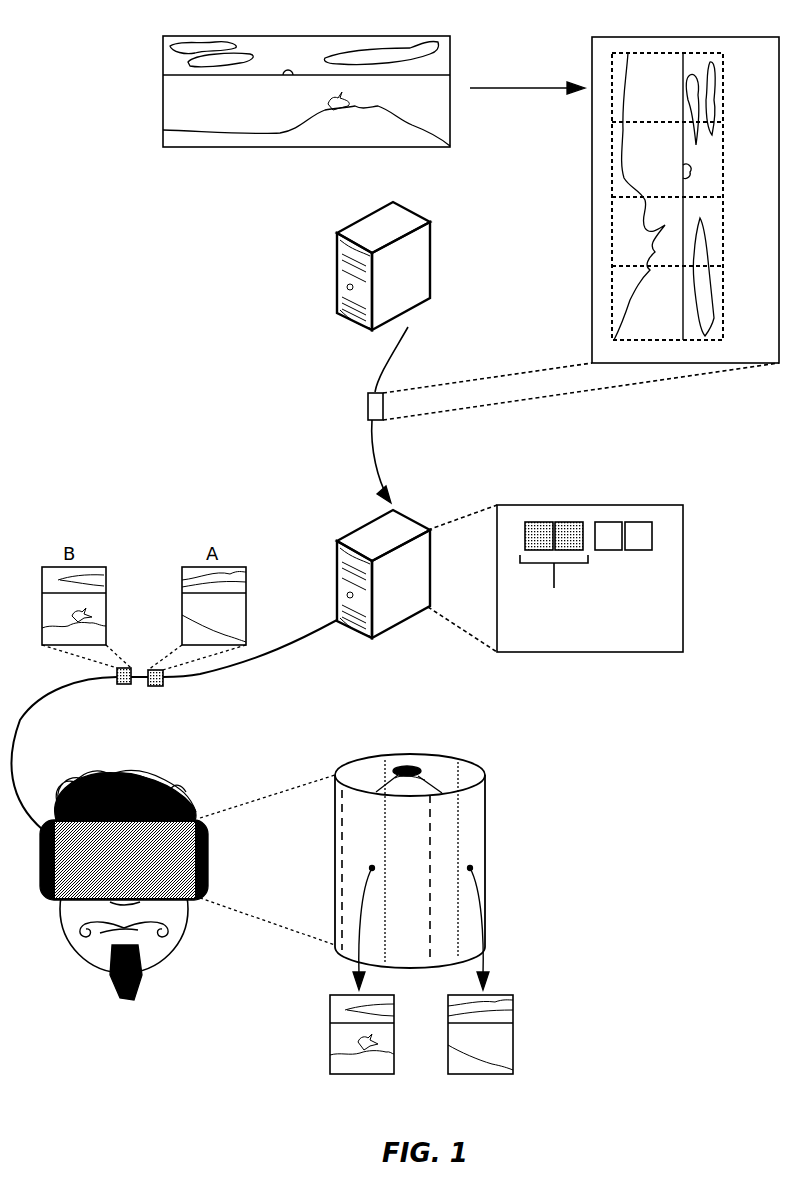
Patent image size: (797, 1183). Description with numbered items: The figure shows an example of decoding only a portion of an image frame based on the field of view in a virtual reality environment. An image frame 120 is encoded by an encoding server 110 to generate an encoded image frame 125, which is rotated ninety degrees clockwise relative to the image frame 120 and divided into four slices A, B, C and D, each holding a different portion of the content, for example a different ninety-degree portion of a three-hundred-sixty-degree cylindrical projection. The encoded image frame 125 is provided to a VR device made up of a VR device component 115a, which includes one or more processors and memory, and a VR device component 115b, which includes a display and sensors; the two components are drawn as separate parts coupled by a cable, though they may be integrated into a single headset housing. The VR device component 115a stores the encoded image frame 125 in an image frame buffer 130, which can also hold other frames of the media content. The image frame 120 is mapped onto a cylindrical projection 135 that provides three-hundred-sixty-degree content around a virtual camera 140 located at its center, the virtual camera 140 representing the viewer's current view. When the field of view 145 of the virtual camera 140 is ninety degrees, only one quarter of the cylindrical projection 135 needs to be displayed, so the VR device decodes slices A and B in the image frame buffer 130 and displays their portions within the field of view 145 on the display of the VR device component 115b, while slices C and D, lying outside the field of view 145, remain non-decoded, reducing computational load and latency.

The encoding server 110 is at (388, 210).
The VR device component 115a is at (388, 514).
The VR device component 115b is at (206, 878).
The image frame 120 is at (163, 95).
The encoded image frame 125 is at (752, 37).
The image frame buffer 130 is at (663, 505).
The cylindrical projection 135 is at (408, 851).
The virtual camera 140 is at (414, 766).
The field of view 145 is at (424, 781).